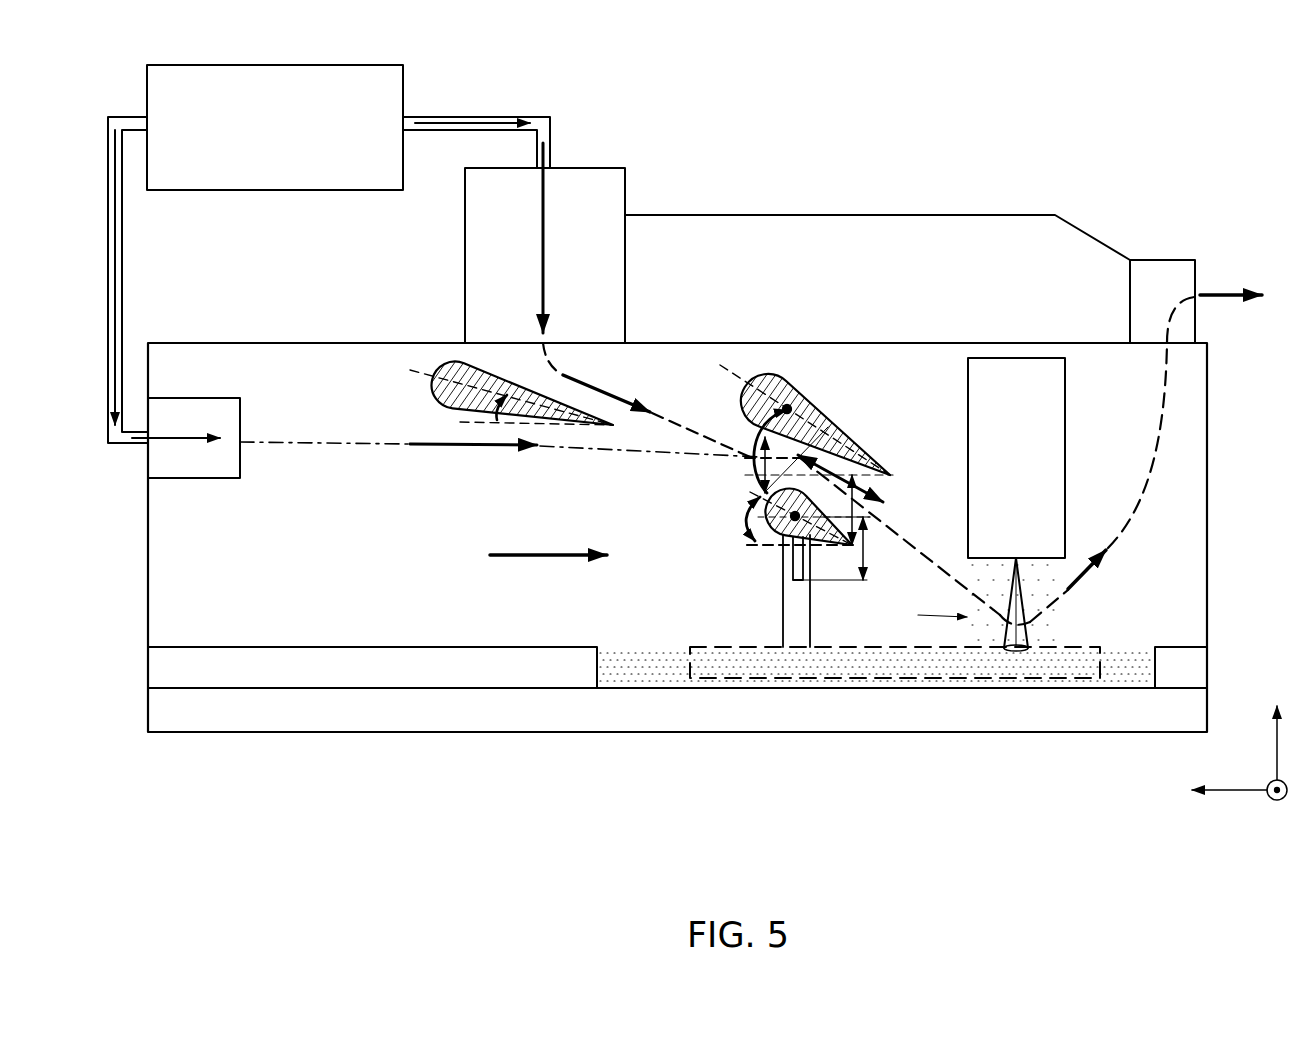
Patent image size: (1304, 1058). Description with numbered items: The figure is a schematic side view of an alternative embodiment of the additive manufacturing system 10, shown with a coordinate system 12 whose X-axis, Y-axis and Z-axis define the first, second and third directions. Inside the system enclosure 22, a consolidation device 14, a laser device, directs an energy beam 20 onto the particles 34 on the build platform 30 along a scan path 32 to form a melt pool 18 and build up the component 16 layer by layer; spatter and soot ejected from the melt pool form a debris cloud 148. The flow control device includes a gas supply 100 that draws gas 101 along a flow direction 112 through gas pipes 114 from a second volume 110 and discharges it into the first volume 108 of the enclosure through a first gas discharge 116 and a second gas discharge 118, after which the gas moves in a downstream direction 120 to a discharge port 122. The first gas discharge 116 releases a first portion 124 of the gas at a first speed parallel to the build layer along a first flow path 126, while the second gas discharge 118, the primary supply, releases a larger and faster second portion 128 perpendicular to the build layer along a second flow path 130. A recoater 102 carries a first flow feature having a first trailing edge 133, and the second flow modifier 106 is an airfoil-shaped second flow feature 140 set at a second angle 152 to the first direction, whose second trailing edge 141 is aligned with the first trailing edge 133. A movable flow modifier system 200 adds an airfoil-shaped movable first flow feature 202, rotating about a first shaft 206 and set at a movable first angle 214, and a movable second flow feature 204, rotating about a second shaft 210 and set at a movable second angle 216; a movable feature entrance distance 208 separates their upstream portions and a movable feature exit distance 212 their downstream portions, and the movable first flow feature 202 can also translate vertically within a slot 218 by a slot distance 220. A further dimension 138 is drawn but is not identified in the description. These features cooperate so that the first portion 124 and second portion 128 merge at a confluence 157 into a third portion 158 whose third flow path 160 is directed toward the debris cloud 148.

The additive manufacturing system 10 is at (1032, 78).
The coordinate system 12 is at (1238, 824).
The consolidation device 14 is at (1055, 430).
The component 16 is at (732, 668).
The melt pool 18 is at (1018, 653).
The energy beam 20 is at (1020, 628).
The system enclosure 22 is at (147, 608).
The build platform 30 is at (570, 718).
The scan path 32 is at (750, 645).
The particles 34 is at (677, 677).
The gas supply 100 is at (676, 138).
The gas 101 is at (251, 302).
The recoater 102 is at (795, 635).
The second flow modifier 106 is at (433, 381).
The first volume 108 is at (382, 536).
The second volume 110 is at (275, 127).
The flow direction 112 is at (500, 117).
The gas pipes 114 is at (438, 116).
The first gas discharge 116 is at (205, 398).
The second gas discharge 118 is at (465, 282).
The downstream direction 120 is at (541, 560).
The discharge port 122 is at (1199, 263).
The first portion 124 is at (180, 445).
The first flow path 126 is at (302, 440).
The second portion 128 is at (545, 272).
The second flow path 130 is at (663, 415).
The first trailing edge 133 is at (856, 552).
The chord direction 138 is at (857, 464).
The second flow feature 140 is at (440, 398).
The second trailing edge 141 is at (613, 428).
The debris cloud 148 is at (916, 612).
The second angle 152 is at (490, 415).
The confluence 157 is at (748, 457).
The third portion 158 is at (940, 572).
The third flow path 160 is at (1148, 475).
The movable flow modifier system 200 is at (886, 311).
The movable first flow feature 202 is at (767, 522).
The movable second flow feature 204 is at (803, 383).
The first shaft 206 is at (756, 524).
The movable feature entrance distance 208 is at (763, 482).
The second shaft 210 is at (802, 407).
The movable feature exit distance 212 is at (888, 503).
The movable first angle 214 is at (753, 503).
The movable second angle 216 is at (753, 434).
The slot 218 is at (780, 568).
The slot distance 220 is at (868, 568).